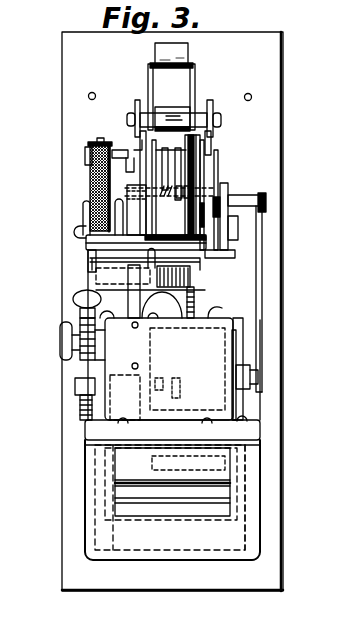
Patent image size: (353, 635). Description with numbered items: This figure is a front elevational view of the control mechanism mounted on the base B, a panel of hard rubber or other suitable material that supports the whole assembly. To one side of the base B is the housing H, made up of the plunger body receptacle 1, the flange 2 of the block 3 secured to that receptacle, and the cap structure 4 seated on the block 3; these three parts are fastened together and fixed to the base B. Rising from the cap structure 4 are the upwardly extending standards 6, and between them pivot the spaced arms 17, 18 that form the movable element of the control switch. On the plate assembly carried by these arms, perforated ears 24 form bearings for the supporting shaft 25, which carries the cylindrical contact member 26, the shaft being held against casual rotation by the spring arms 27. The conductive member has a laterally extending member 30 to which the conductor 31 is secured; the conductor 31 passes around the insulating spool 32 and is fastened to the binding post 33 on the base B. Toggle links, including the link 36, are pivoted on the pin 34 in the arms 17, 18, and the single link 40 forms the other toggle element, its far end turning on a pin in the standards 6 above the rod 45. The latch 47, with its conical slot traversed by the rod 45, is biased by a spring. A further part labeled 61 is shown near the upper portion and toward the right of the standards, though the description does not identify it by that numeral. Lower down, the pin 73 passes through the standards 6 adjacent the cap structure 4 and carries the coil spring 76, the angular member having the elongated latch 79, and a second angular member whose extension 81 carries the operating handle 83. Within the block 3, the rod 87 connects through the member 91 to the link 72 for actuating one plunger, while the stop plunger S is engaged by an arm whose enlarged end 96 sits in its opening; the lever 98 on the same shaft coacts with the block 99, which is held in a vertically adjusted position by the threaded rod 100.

The plunger body receptacle 1 is at (250, 538).
The flange 2 is at (90, 421).
The block 3 is at (238, 410).
The cap structure 4 is at (100, 201).
The standards 6 is at (208, 253).
The arm 17 is at (146, 186).
The arm 18 is at (223, 187).
The perforated ears 24 is at (135, 108).
The supporting shaft 25 is at (128, 118).
The cylindrical contact member 26 is at (173, 108).
The spring arms 27 is at (140, 105).
The laterally extending member 30 is at (125, 155).
The conductor 31 is at (90, 185).
The insulating spool 32 is at (84, 228).
The binding post 33 is at (169, 187).
The pin 34 is at (200, 160).
The link 36 is at (172, 150).
The link 40 is at (165, 211).
The rod 45 is at (205, 237).
The latch 47 is at (200, 190).
The magnet 61 is at (178, 62).
The link 72 is at (262, 316).
The pin 73 is at (262, 290).
The coil spring 76 is at (200, 290).
The elongated latch 79 is at (214, 314).
The extension 81 is at (108, 290).
The operating handle 83 is at (62, 350).
The rod 87 is at (250, 378).
The member 91 is at (260, 400).
The enlarged end 96 is at (170, 382).
The lever 98 is at (62, 330).
The block 99 is at (75, 388).
The threaded rod 100 is at (105, 362).
The base B is at (278, 254).
The housing H is at (270, 490).
The stop plunger S is at (240, 488).